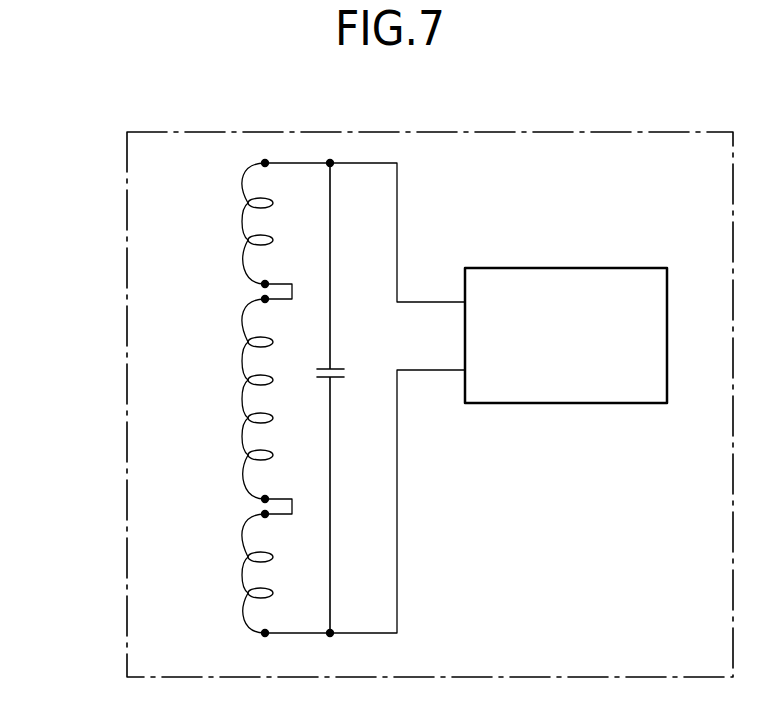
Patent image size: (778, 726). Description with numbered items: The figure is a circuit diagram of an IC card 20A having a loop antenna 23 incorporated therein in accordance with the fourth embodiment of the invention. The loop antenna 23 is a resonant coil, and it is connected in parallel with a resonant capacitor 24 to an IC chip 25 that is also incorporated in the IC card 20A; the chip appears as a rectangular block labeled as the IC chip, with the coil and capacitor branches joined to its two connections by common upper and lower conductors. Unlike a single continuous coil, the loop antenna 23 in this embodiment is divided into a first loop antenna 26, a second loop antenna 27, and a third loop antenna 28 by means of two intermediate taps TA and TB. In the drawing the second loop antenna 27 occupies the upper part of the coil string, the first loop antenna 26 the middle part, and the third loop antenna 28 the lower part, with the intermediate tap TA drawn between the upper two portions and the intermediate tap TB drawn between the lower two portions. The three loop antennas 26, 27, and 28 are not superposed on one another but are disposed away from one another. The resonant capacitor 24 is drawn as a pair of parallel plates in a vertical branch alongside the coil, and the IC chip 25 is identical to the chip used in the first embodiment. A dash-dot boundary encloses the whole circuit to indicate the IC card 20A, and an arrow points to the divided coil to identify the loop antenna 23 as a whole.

The IC card 20A is at (621, 118).
The loop antenna 23 is at (202, 398).
The resonant capacitor 24 is at (336, 368).
The IC chip 25 is at (609, 268).
The first loop antenna 26 is at (243, 436).
The second loop antenna 27 is at (243, 220).
The third loop antenna 28 is at (243, 572).
The intermediate tap TA is at (266, 283).
The intermediate tap TB is at (266, 498).